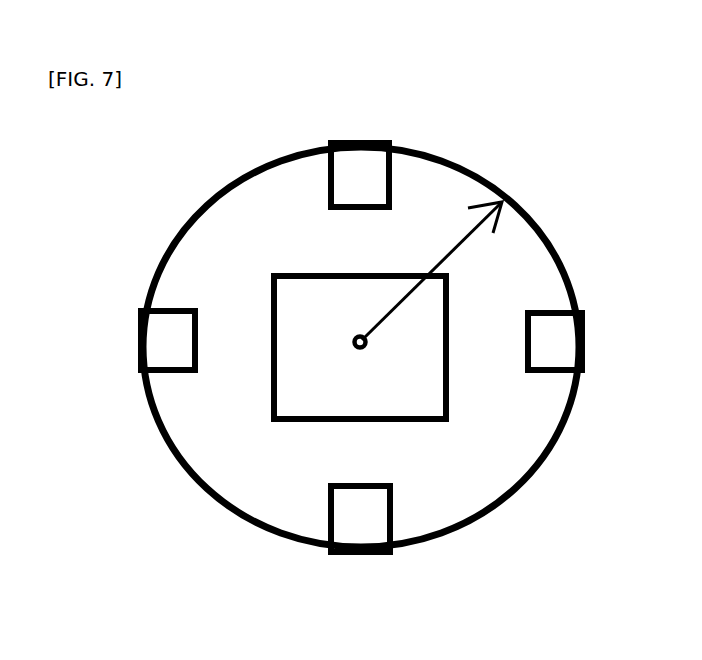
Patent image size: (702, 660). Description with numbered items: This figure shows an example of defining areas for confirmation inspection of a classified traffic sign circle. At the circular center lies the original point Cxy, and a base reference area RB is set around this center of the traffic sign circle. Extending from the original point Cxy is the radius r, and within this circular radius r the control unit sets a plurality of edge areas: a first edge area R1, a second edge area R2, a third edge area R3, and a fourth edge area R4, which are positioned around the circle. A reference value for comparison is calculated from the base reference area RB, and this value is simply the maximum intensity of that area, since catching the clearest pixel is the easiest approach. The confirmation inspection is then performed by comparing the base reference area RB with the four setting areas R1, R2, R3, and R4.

The first edge area R1 is at (168, 341).
The second edge area R2 is at (360, 175).
The third edge area R3 is at (360, 519).
The fourth edge area R4 is at (555, 342).
The base reference area RB is at (360, 347).
The original point Cxy is at (396, 366).
The radius r is at (432, 271).